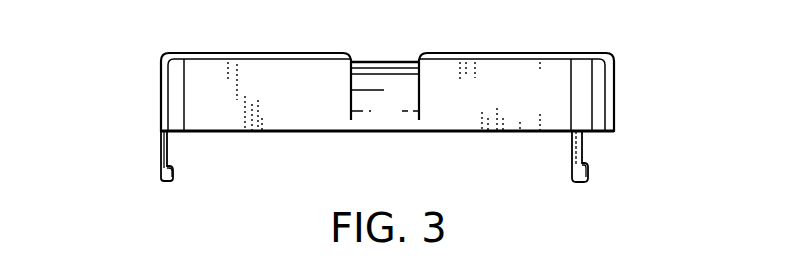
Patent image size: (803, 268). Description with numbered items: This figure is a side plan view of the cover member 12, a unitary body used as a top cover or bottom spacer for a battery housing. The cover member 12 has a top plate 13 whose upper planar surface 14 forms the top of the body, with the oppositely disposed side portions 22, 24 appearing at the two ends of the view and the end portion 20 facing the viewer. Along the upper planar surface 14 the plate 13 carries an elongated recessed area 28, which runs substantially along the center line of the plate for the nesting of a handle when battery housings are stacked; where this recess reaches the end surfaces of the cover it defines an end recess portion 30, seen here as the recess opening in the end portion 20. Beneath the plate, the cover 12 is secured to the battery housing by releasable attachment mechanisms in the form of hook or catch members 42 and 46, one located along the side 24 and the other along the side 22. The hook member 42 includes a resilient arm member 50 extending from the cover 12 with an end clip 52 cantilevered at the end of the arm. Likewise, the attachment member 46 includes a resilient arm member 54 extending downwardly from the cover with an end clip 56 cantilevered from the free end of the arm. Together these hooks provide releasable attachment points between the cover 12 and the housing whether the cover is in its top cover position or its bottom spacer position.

The cover member 12 is at (157, 97).
The top plate 13 is at (263, 53).
The upper planar surface 14 is at (197, 51).
The end portion 20 is at (496, 112).
The side portion 22 is at (615, 97).
The side portion 24 is at (160, 77).
The recessed area 28 is at (376, 55).
The end recess portion 30 is at (378, 102).
The attachment mechanism 42 is at (160, 169).
The attachment mechanism 46 is at (583, 156).
The resilient arm member 50 is at (168, 152).
The end clip 52 is at (173, 177).
The resilient arm member 54 is at (571, 150).
The end clip 56 is at (572, 178).